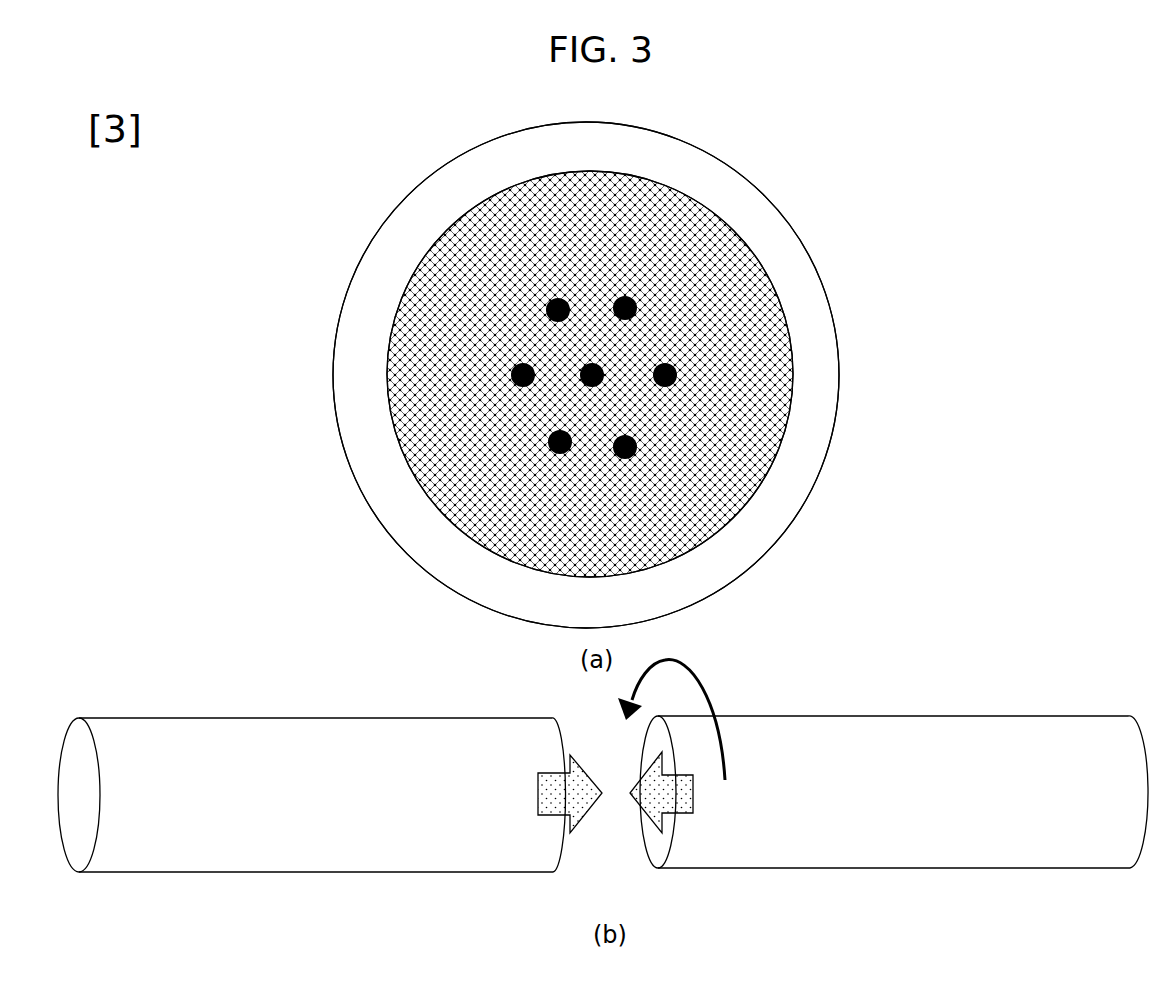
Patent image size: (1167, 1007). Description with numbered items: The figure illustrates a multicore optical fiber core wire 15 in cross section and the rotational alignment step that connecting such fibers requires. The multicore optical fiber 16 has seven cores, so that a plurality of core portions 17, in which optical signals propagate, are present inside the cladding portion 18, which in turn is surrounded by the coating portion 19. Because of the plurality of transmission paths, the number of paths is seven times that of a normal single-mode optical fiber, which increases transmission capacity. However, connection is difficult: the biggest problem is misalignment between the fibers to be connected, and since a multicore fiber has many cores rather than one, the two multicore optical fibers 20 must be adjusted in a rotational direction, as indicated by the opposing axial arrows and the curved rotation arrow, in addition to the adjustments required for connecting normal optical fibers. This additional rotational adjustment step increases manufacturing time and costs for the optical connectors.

The multicore optical fiber core wire 15 is at (768, 186).
The multicore optical fiber 16 is at (393, 310).
The core portion 17 is at (640, 297).
The cladding portion 18 is at (775, 293).
The coating portion 19 is at (830, 323).
The multicore optical fiber 20 is at (375, 870).